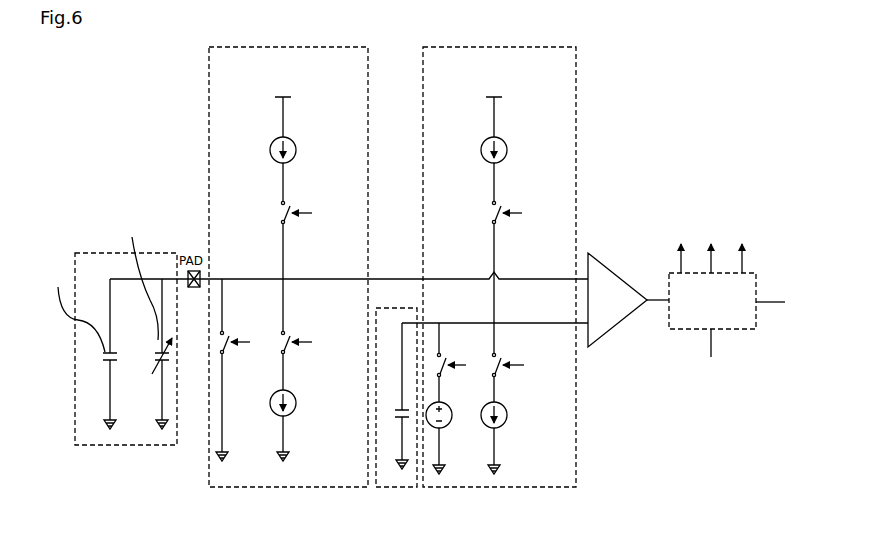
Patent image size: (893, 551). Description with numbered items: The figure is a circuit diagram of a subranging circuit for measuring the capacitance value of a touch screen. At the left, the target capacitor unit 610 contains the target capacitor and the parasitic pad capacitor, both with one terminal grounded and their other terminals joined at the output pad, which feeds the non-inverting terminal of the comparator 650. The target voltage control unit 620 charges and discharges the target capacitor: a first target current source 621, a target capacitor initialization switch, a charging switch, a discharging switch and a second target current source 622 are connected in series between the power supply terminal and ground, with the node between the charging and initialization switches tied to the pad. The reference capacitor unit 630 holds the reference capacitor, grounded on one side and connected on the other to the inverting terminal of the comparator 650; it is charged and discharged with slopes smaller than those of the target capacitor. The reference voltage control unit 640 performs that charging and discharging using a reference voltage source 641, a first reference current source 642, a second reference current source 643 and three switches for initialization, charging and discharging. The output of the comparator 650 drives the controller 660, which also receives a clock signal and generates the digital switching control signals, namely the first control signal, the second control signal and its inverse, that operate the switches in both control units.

The target capacitor unit 610 is at (125, 445).
The target voltage control unit 620 is at (288, 293).
The first target current source 621 is at (276, 139).
The second target current source 622 is at (272, 399).
The reference capacitor unit 630 is at (393, 487).
The reference voltage control unit 640 is at (499, 293).
The reference voltage source 641 is at (449, 426).
The first reference current source 642 is at (485, 139).
The second reference current source 643 is at (504, 426).
The comparator 650 is at (614, 270).
The controller 660 is at (682, 329).